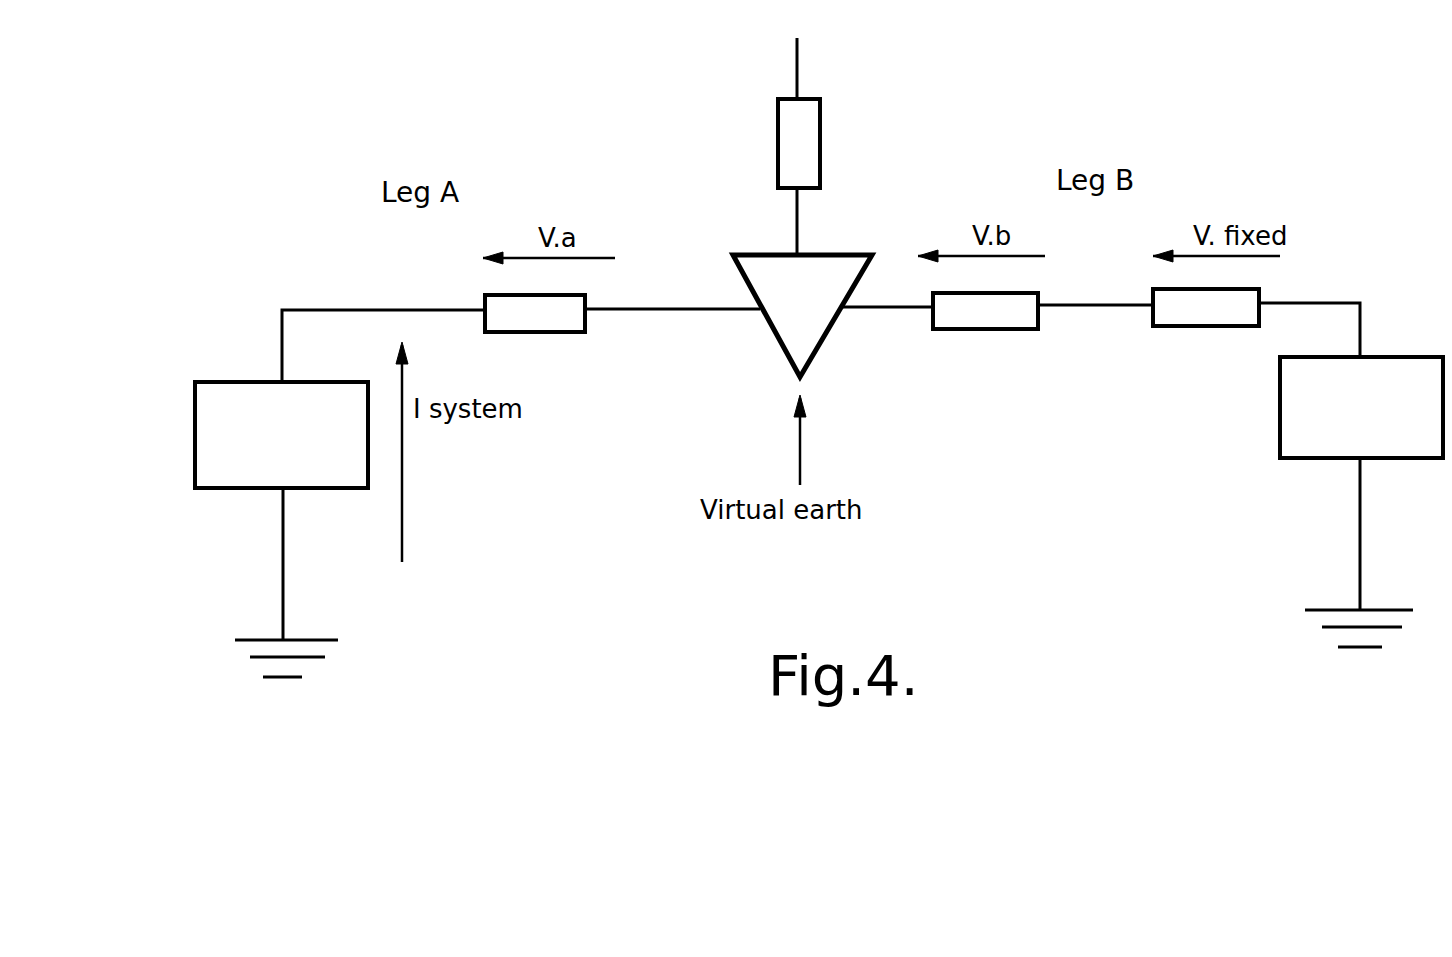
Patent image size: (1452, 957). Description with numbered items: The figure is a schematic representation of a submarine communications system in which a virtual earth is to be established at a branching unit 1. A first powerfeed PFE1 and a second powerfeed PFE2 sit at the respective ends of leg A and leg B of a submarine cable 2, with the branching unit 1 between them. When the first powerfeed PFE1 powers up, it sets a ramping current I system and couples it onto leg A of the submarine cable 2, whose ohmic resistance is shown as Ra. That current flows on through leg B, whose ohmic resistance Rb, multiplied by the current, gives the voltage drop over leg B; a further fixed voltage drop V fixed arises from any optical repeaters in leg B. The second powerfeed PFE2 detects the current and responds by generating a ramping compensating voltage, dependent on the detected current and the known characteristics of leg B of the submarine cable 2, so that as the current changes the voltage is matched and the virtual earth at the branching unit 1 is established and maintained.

The branching unit 1 is at (756, 255).
The submarine cable 2 is at (330, 311).
The ohmic resistance of leg A Ra is at (535, 331).
The ohmic resistance of leg B Rb is at (985, 328).
The first powerfeed PFE1 is at (237, 485).
The second powerfeed PFE2 is at (1302, 462).